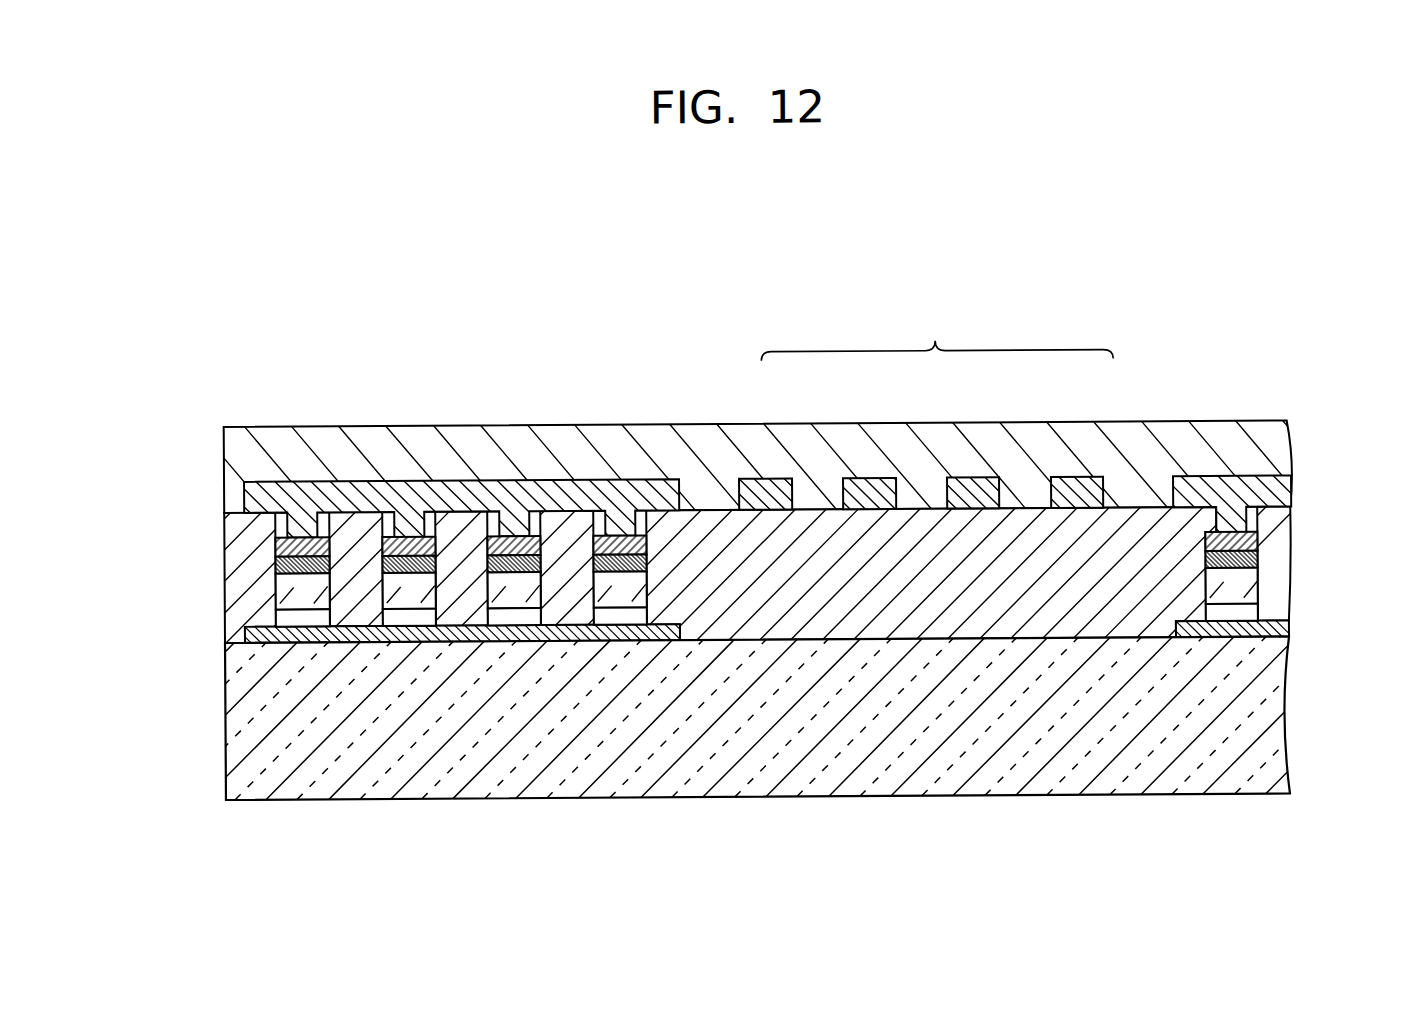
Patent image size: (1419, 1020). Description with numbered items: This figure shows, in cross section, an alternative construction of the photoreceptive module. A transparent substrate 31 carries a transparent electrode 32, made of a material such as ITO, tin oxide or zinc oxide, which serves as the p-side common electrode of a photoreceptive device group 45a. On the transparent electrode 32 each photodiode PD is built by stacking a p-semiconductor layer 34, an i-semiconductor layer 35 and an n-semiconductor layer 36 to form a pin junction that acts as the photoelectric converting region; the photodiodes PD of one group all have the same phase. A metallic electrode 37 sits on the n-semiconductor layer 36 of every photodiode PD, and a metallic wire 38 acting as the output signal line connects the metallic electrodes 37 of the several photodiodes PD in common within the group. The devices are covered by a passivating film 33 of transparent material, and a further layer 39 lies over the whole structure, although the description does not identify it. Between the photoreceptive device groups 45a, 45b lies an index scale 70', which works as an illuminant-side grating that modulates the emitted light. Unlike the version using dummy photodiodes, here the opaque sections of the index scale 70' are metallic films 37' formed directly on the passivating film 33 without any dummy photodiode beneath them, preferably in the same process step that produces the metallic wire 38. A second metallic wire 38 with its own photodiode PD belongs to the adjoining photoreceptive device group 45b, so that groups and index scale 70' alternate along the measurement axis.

The transparent substrate 31 is at (242, 725).
The transparent electrode 32 is at (240, 636).
The passivating film 33 is at (711, 517).
The p-semiconductor layer 34 is at (278, 622).
The i-semiconductor layer 35 is at (282, 593).
The n-semiconductor layer 36 is at (278, 564).
The metallic electrode 37 is at (764, 524).
The metallic film 37' is at (921, 435).
The metallic wire 38 is at (459, 483).
The top insulating layer 39 is at (352, 442).
The photoreceptive device group 45a is at (413, 350).
The photoreceptive device group 45b is at (1168, 321).
The index scale 70' is at (937, 332).
The photodiode PD is at (761, 511).